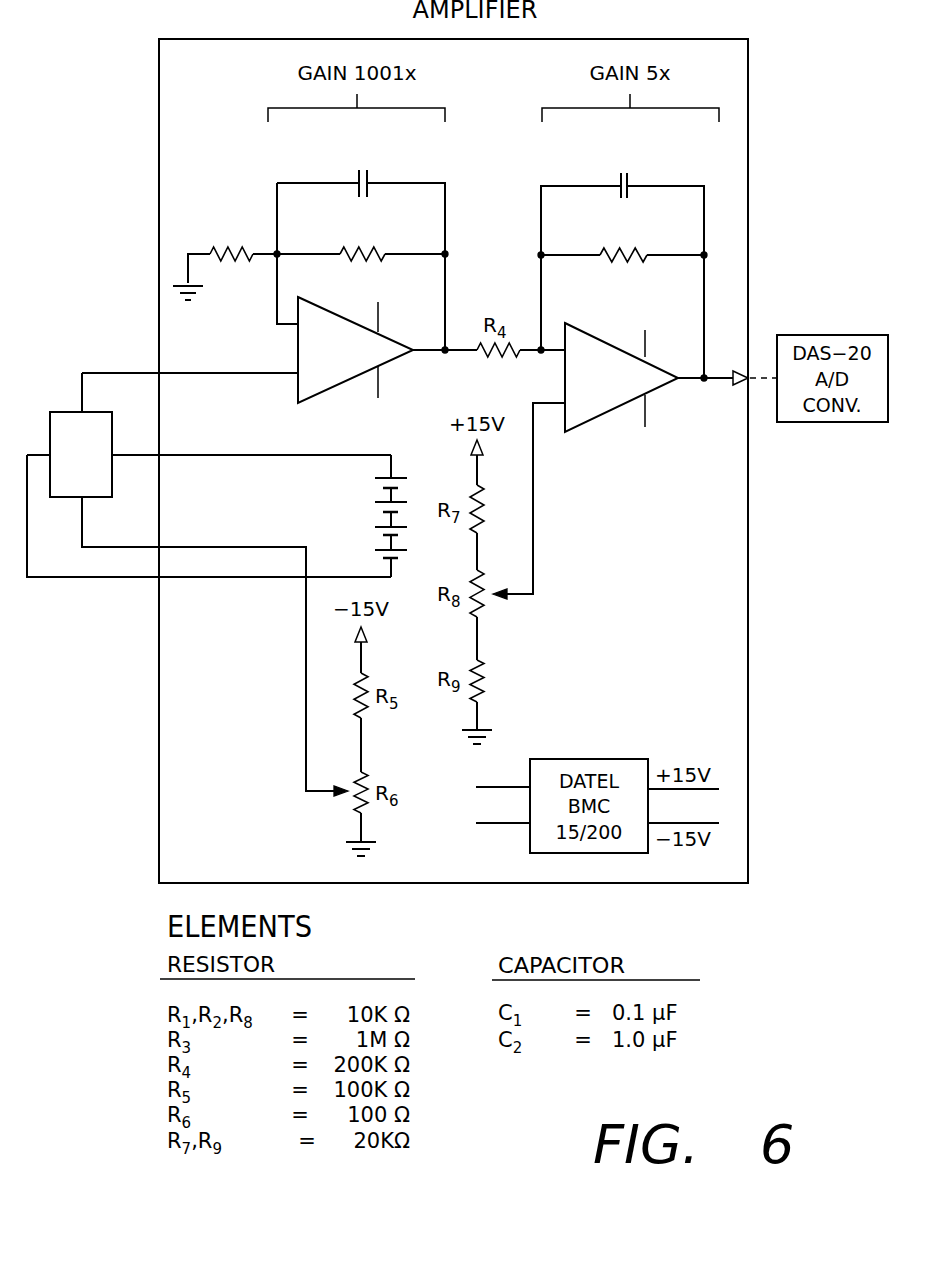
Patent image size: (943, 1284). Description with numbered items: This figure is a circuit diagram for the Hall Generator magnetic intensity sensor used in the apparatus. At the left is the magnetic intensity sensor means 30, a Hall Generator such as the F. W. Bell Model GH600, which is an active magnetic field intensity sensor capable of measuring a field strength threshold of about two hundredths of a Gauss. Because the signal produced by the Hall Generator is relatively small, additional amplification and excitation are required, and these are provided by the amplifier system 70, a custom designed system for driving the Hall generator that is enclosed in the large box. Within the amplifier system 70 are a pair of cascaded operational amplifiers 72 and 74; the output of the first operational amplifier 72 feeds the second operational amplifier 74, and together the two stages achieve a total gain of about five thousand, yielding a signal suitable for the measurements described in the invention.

The magnetic intensity sensor means 30 is at (65, 410).
The amplifier system 70 is at (755, 126).
The operational amplifier 72 is at (437, 183).
The operational amplifier 74 is at (686, 186).